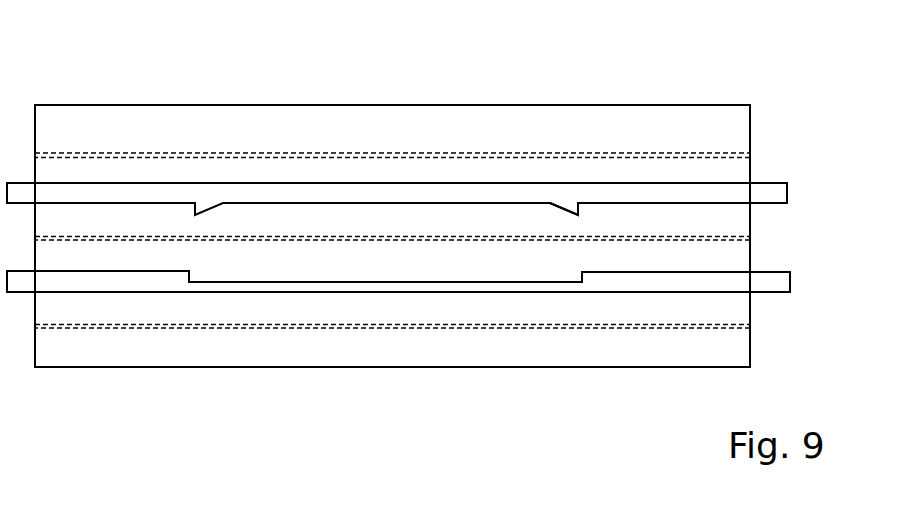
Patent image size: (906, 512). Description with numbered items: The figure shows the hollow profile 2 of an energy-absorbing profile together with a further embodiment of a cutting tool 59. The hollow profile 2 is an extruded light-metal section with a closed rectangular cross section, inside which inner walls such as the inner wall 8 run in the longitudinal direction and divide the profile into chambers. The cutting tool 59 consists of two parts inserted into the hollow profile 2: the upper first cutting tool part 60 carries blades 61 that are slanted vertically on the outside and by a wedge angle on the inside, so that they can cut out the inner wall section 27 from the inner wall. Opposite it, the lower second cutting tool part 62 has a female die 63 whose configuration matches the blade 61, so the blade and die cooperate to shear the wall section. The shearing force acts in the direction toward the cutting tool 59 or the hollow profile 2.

The hollow profile 2 is at (590, 101).
The inner wall 8 is at (86, 236).
The inner wall section 27 is at (441, 249).
The cutting tool 59 is at (659, 163).
The first cutting tool part 60 is at (138, 183).
The blade 61 is at (565, 207).
The second cutting tool part 62 is at (118, 288).
The female die 63 is at (297, 288).